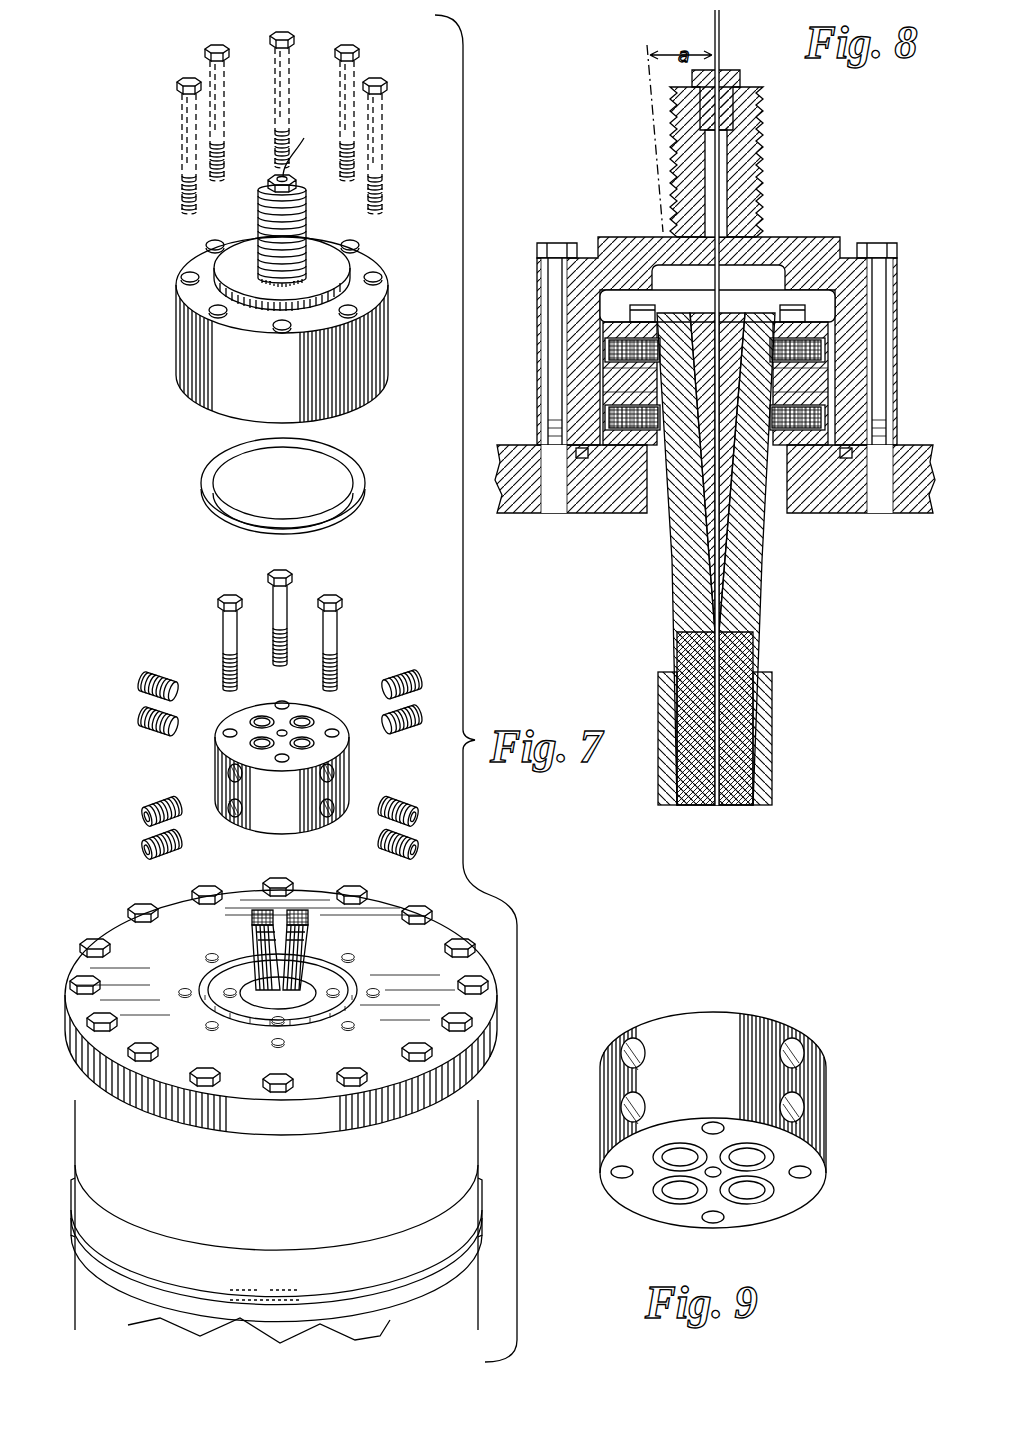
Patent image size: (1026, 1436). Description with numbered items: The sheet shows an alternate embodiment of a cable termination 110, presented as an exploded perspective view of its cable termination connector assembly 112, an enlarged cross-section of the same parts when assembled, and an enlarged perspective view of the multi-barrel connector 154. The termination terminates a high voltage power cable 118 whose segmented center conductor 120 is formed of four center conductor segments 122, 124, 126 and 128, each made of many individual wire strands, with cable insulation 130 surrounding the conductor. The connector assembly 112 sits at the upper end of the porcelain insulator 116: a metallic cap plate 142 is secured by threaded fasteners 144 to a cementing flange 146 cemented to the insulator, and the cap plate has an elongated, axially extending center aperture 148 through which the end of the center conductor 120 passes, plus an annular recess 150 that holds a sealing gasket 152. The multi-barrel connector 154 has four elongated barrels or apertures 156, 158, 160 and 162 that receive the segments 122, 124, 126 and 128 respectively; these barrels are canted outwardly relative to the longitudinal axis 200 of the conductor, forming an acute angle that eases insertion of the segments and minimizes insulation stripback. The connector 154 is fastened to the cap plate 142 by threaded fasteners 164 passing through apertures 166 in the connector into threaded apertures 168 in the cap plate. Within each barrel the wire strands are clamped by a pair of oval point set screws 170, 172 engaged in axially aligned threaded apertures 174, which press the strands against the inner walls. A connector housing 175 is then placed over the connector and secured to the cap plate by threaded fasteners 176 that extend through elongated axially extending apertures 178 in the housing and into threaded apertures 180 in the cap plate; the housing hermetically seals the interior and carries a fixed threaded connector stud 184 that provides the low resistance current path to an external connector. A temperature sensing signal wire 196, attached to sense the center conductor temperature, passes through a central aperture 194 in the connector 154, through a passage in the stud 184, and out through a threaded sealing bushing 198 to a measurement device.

In FIG. 7, the cable termination 110 is at (284, 1368).
In FIG. 7, the cable termination connector assembly 112 is at (409, 620).
In FIG. 8, the cable termination connector assembly 112 is at (836, 153).
In FIG. 7, the porcelain insulator 116 is at (115, 1300).
In FIG. 8, the high voltage power cable 118 is at (735, 559).
In FIG. 7, the segmented center conductor 120 is at (278, 917).
In FIG. 8, the segmented center conductor 120 is at (723, 559).
In FIG. 7, the center conductor segment 122 is at (252, 928).
In FIG. 8, the center conductor segment 122 is at (680, 610).
In FIG. 7, the center conductor segment 124 is at (308, 928).
In FIG. 7, the center conductor segment 126 is at (258, 910).
In FIG. 8, the center conductor segment 126 is at (705, 595).
In FIG. 7, the center conductor segment 128 is at (284, 905).
In FIG. 8, the center conductor segment 128 is at (757, 600).
In FIG. 8, the cable insulation 130 is at (773, 700).
In FIG. 7, the cap plate 142 is at (266, 1006).
In FIG. 8, the cap plate 142 is at (717, 510).
In FIG. 7, the threaded fasteners 144 is at (97, 907).
In FIG. 7, the cementing flange 146 is at (86, 1128).
In FIG. 7, the center aperture 148 is at (333, 998).
In FIG. 8, the center aperture 148 is at (790, 505).
In FIG. 7, the annular recess 150 is at (229, 996).
In FIG. 8, the annular recess 150 is at (582, 460).
In FIG. 7, the sealing gasket 152 is at (205, 488).
In FIG. 8, the sealing gasket 152 is at (846, 460).
In FIG. 7, the multi-barrel connector 154 is at (293, 760).
In FIG. 8, the multi-barrel connector 154 is at (714, 322).
In FIG. 9, the multi-barrel connector 154 is at (715, 1119).
In FIG. 7, the barrel 156 is at (258, 745).
In FIG. 8, the barrel 156 is at (650, 322).
In FIG. 9, the barrel 156 is at (668, 1152).
In FIG. 7, the barrel 158 is at (310, 744).
In FIG. 9, the barrel 158 is at (760, 1152).
In FIG. 7, the barrel 160 is at (258, 720).
In FIG. 9, the barrel 160 is at (672, 1202).
In FIG. 7, the barrel 162 is at (302, 716).
In FIG. 8, the barrel 162 is at (785, 322).
In FIG. 9, the barrel 162 is at (750, 1202).
In FIG. 7, the threaded fasteners 164 is at (229, 596).
In FIG. 8, the threaded fasteners 164 is at (640, 305).
In FIG. 7, the apertures 166 is at (281, 703).
In FIG. 9, the apertures 166 is at (708, 1124).
In FIG. 7, the threaded apertures 168 is at (276, 1024).
In FIG. 7, the set screw 170 is at (146, 716).
In FIG. 8, the set screw 170 is at (618, 418).
In FIG. 7, the set screw 172 is at (175, 672).
In FIG. 8, the set screw 172 is at (618, 348).
In FIG. 7, the threaded apertures 174 is at (232, 778).
In FIG. 8, the threaded apertures 174 is at (603, 360).
In FIG. 9, the threaded apertures 174 is at (621, 1107).
In FIG. 7, the connector housing 175 is at (282, 328).
In FIG. 8, the connector housing 175 is at (717, 304).
In FIG. 7, the threaded fasteners 176 is at (282, 32).
In FIG. 8, the threaded fasteners 176 is at (555, 242).
In FIG. 7, the elongated axially extending apertures 178 is at (214, 246).
In FIG. 8, the elongated axially extending apertures 178 is at (542, 276).
In FIG. 7, the threaded apertures 180 is at (206, 1025).
In FIG. 8, the threaded apertures 180 is at (552, 488).
In FIG. 7, the threaded connector stud 184 is at (292, 190).
In FIG. 8, the threaded connector stud 184 is at (743, 147).
In FIG. 7, the central aperture 194 is at (284, 736).
In FIG. 8, the central aperture 194 is at (760, 290).
In FIG. 9, the central aperture 194 is at (715, 1166).
In FIG. 7, the temperature sensing signal wire 196 is at (304, 138).
In FIG. 8, the temperature sensing signal wire 196 is at (714, 20).
In FIG. 7, the threaded sealing bushing 198 is at (279, 177).
In FIG. 8, the threaded sealing bushing 198 is at (741, 78).
In FIG. 8, the longitudinal axis 200 is at (720, 70).